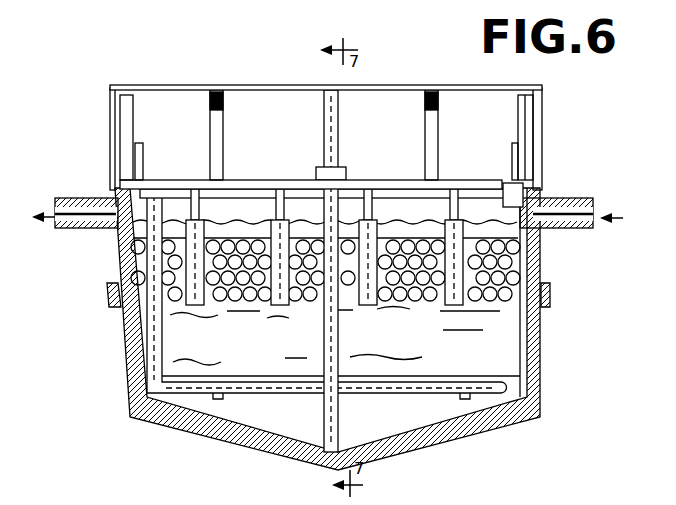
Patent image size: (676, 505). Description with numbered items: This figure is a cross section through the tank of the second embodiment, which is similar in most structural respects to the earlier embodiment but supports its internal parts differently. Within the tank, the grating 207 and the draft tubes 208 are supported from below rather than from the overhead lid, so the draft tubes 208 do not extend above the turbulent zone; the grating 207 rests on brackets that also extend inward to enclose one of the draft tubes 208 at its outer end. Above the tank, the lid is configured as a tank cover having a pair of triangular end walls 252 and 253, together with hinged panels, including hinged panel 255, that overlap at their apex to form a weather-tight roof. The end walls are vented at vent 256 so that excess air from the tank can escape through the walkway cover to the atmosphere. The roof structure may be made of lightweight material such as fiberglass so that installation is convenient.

The grating 207 is at (392, 228).
The draft tubes 208 is at (283, 306).
The triangular end wall 252 is at (538, 121).
The triangular end wall 253 is at (113, 105).
The hinged panel 255 is at (401, 85).
The vent 256 is at (128, 143).